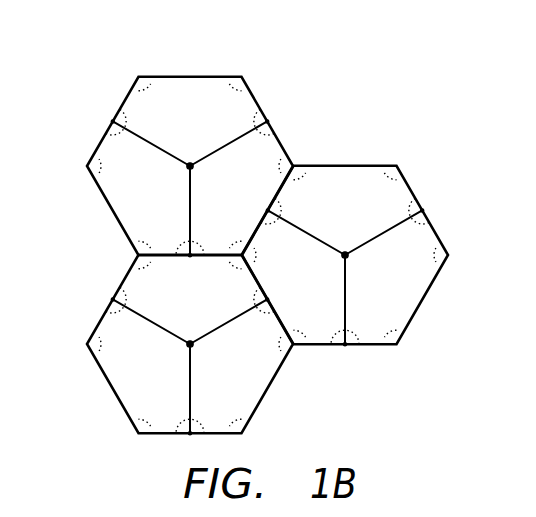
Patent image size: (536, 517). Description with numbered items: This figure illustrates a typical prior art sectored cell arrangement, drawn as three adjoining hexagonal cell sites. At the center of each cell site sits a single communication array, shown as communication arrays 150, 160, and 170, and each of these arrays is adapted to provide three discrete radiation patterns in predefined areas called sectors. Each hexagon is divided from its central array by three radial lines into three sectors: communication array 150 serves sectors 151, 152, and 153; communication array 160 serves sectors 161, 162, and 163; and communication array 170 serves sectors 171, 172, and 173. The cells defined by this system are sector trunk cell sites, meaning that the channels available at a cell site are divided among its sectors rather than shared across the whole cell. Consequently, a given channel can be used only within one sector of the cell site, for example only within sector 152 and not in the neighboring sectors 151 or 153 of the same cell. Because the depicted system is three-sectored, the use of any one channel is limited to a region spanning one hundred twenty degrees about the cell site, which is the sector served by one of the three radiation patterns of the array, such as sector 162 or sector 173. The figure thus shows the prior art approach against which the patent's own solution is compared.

The communication array 150 is at (187, 162).
The sector 151 is at (190, 77).
The sector 152 is at (280, 142).
The sector 153 is at (110, 212).
The communication array 160 is at (343, 252).
The sector 161 is at (365, 165).
The sector 162 is at (423, 298).
The sector 163 is at (322, 345).
The communication array 170 is at (188, 341).
The sector 171 is at (127, 280).
The sector 172 is at (262, 403).
The sector 173 is at (110, 388).